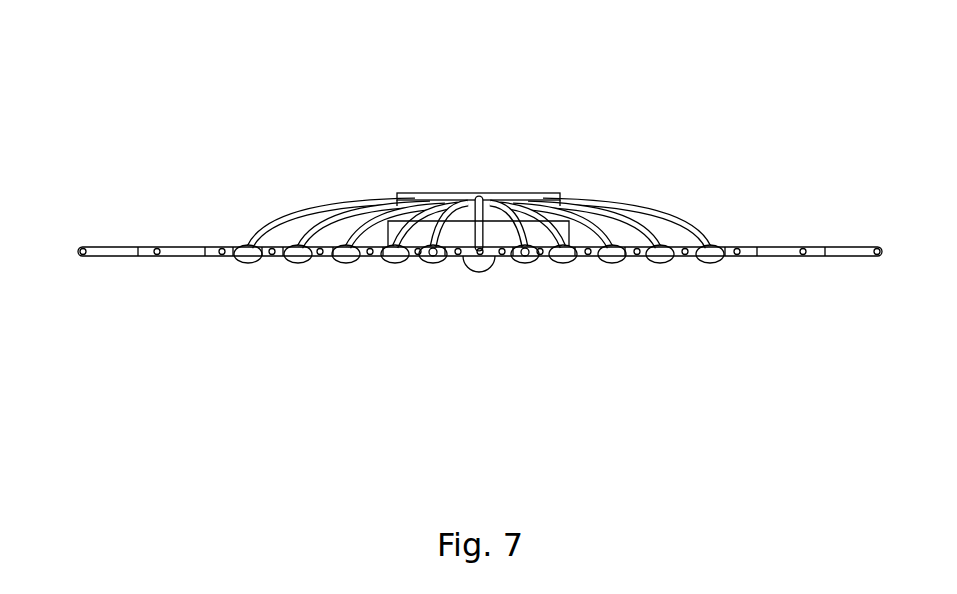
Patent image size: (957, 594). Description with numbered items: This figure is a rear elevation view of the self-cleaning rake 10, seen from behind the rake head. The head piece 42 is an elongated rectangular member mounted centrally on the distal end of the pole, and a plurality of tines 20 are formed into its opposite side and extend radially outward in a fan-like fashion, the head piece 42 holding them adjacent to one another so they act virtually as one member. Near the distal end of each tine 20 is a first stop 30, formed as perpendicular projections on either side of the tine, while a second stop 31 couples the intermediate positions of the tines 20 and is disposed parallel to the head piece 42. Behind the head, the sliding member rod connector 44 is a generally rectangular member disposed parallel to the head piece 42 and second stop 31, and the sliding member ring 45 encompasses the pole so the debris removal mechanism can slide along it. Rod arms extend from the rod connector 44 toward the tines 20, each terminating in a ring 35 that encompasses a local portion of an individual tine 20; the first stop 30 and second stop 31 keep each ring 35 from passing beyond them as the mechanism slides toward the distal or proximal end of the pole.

The self-cleaning rake 10 is at (142, 159).
The tines 20 is at (93, 247).
The first stop 30 is at (148, 258).
The second stop 31 is at (282, 262).
The ring 35 is at (246, 243).
The head piece 42 is at (431, 232).
The sliding member rod connector 44 is at (488, 199).
The sliding member ring 45 is at (479, 273).